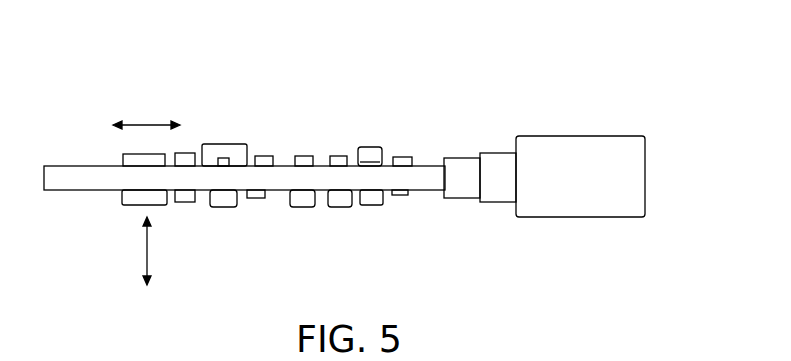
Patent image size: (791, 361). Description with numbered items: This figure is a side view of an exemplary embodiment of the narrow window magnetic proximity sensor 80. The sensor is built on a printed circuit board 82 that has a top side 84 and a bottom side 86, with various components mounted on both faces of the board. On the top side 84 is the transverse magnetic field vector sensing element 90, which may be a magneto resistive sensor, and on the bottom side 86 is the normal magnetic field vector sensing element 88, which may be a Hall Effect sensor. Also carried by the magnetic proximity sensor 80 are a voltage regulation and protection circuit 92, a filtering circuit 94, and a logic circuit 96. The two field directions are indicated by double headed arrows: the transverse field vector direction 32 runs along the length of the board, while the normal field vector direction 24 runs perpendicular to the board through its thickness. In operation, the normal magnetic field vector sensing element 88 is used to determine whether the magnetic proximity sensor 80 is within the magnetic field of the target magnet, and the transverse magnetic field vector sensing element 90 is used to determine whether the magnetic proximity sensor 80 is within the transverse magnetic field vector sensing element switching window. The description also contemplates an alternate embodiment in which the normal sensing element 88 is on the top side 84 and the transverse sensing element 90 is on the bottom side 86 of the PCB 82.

The magnetic proximity sensor 80 is at (448, 67).
The transverse magnetic field vector sensing element 90 is at (120, 162).
The filtering circuit 94 is at (181, 153).
The logic circuit 96 is at (222, 146).
The top side 84 is at (289, 156).
The printed circuit board 82 is at (322, 156).
The normal magnetic field vector sensing element 88 is at (158, 207).
The bottom side 86 is at (278, 208).
The voltage regulation and protection circuit 92 is at (340, 208).
The transverse field vector direction 32 is at (146, 121).
The normal field vector direction 24 is at (143, 252).